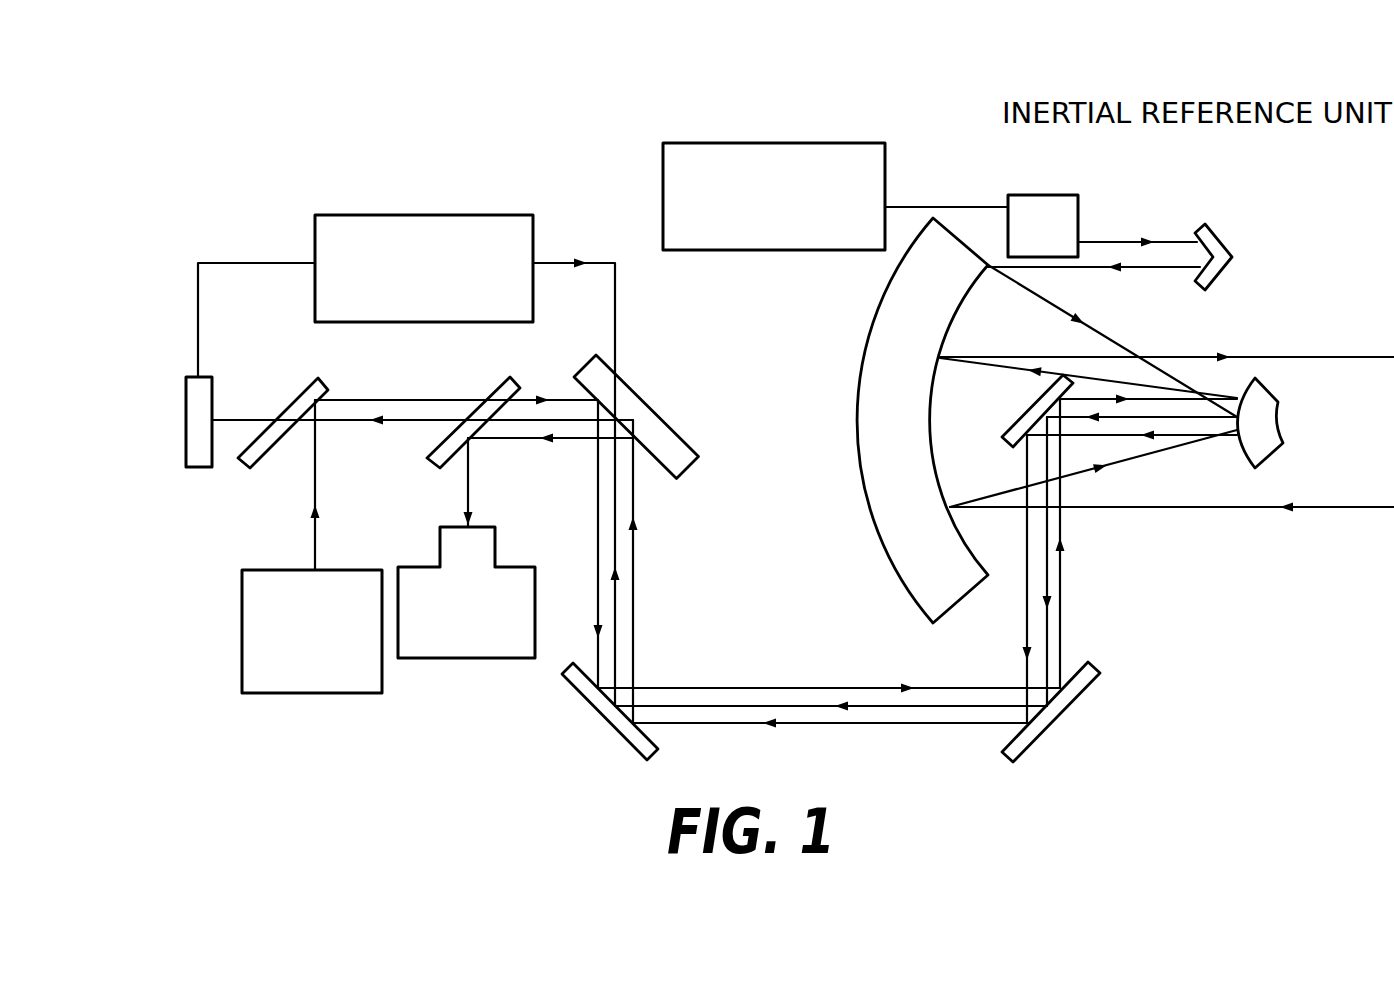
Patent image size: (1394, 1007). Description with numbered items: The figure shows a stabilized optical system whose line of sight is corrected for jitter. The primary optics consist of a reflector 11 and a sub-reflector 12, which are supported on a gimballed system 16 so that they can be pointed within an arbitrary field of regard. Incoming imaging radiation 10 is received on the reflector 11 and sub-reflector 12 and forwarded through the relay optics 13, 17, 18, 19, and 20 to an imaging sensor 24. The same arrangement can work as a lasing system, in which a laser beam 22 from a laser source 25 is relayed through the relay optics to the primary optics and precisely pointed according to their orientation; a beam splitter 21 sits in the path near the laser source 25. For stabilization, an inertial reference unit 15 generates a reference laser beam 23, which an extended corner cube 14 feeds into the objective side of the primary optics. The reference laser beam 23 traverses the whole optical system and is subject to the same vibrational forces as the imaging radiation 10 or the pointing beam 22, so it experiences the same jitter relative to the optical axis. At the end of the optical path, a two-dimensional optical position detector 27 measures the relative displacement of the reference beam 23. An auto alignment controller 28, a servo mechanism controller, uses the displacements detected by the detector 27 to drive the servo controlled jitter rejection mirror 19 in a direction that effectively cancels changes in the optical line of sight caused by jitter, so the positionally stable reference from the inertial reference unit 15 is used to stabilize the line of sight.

The imaging radiation 10 is at (1213, 510).
The reflector 11 is at (873, 352).
The sub-reflector 12 is at (1262, 427).
The relay optics 13 is at (1015, 430).
The extended corner cube 14 is at (1223, 237).
The inertial reference unit 15 is at (1023, 220).
The gimballed system 16 is at (760, 142).
The relay optics 17 is at (1058, 707).
The relay optics 18 is at (607, 716).
The jitter rejection mirror 19 is at (668, 423).
The relay optics 20 is at (492, 388).
The beam splitter 21 is at (297, 400).
The laser beam 22 is at (315, 480).
The reference laser beam 23 is at (1113, 242).
The imaging sensor 24 is at (513, 660).
The laser source 25 is at (312, 695).
The two-dimensional optical position detector 27 is at (190, 425).
The auto alignment controller 28 is at (422, 213).